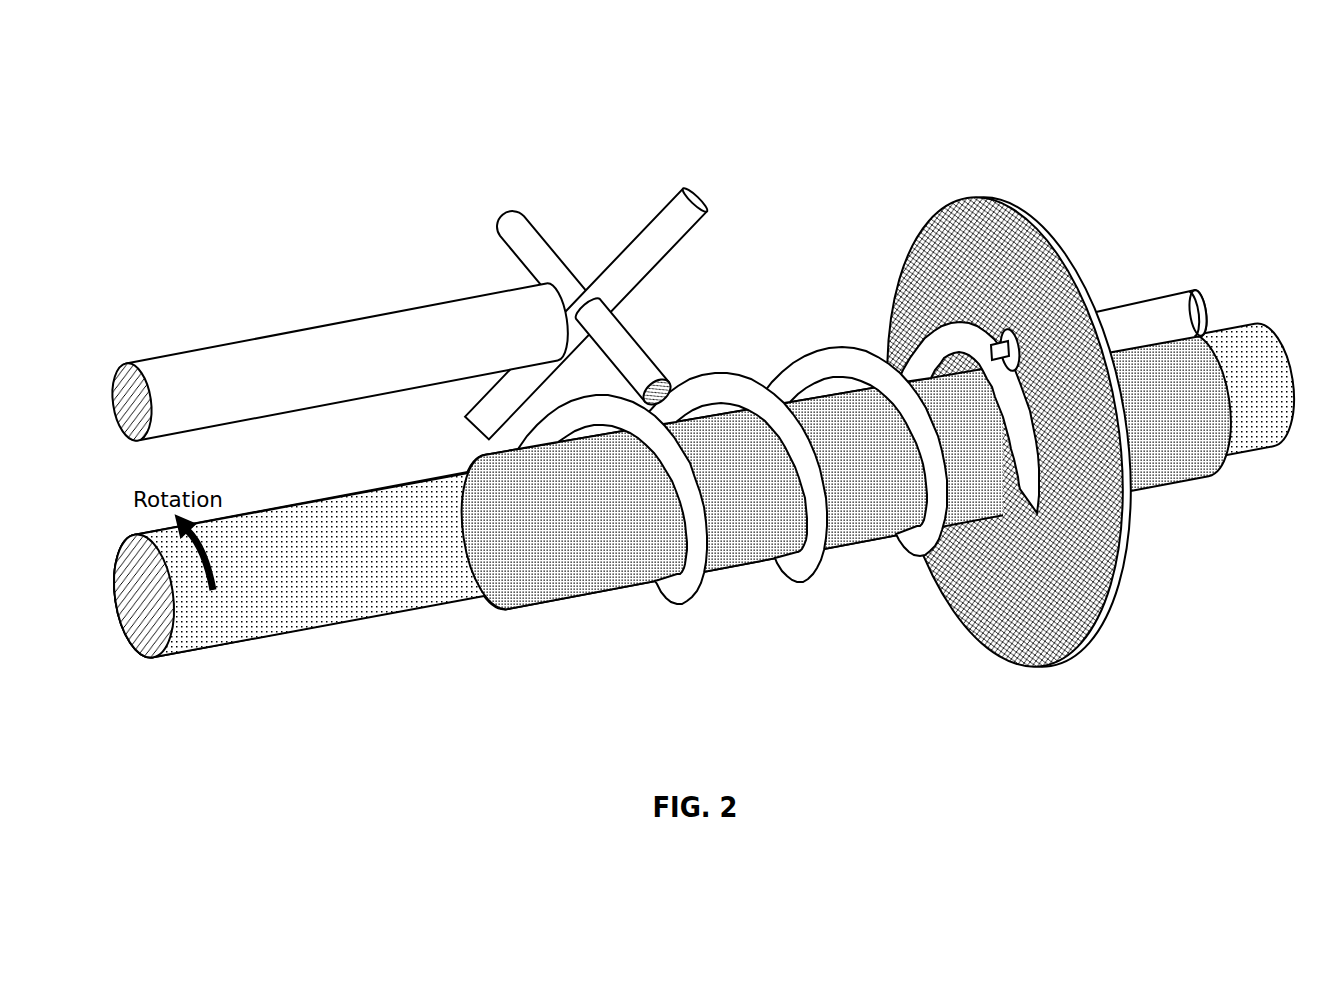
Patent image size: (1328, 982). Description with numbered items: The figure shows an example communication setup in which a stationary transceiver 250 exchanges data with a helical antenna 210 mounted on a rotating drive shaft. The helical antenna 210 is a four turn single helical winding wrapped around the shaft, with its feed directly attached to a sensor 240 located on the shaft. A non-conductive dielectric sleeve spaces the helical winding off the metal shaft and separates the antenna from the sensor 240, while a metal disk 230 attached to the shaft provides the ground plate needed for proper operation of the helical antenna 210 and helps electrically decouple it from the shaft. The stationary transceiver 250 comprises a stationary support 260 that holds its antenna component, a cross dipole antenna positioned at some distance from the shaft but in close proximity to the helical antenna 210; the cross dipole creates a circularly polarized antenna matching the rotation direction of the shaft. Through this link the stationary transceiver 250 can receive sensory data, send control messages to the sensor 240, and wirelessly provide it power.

The helical antenna 210 is at (807, 553).
The metal disk 230 is at (1130, 563).
The sensor 240 is at (1218, 296).
The stationary transceiver 250 is at (451, 244).
The stationary support 260 is at (270, 326).